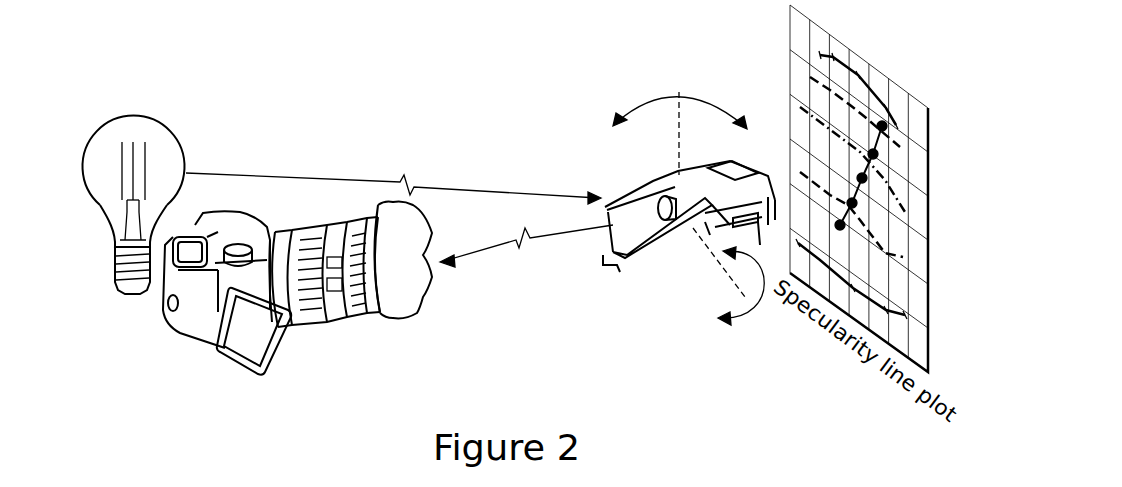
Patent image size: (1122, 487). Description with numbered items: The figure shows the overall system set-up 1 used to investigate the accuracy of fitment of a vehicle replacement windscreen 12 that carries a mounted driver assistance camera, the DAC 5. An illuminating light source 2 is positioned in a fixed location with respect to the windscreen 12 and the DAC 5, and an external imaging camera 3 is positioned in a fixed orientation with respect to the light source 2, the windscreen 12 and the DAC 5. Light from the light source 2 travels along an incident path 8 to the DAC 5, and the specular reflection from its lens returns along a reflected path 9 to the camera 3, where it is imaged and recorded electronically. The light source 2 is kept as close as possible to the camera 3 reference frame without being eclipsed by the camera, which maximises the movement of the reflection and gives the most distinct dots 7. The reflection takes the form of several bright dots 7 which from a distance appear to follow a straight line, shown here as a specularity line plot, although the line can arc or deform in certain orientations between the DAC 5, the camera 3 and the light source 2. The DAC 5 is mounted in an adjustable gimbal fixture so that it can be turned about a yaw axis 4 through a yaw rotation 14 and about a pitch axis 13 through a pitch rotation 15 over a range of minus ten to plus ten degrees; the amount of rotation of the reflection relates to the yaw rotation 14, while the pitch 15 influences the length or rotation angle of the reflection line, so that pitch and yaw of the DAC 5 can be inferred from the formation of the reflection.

The imaging system 1 is at (405, 102).
The illuminating light source 2 is at (153, 126).
The camera 3 is at (336, 312).
The object 4 is at (668, 185).
The driver assistance camera (DAC) 5 is at (647, 187).
The bright dots 7 is at (600, 213).
The incident light 8 is at (498, 191).
The reflected light 9 is at (548, 244).
The windscreen 12 is at (681, 139).
The pitch axis 13 is at (722, 272).
The yaw rotation 14 is at (678, 85).
The pitch 15 is at (730, 312).